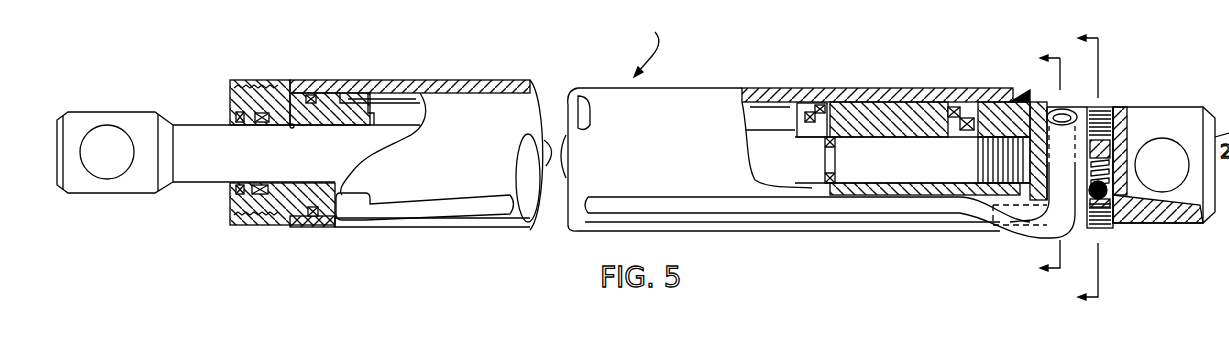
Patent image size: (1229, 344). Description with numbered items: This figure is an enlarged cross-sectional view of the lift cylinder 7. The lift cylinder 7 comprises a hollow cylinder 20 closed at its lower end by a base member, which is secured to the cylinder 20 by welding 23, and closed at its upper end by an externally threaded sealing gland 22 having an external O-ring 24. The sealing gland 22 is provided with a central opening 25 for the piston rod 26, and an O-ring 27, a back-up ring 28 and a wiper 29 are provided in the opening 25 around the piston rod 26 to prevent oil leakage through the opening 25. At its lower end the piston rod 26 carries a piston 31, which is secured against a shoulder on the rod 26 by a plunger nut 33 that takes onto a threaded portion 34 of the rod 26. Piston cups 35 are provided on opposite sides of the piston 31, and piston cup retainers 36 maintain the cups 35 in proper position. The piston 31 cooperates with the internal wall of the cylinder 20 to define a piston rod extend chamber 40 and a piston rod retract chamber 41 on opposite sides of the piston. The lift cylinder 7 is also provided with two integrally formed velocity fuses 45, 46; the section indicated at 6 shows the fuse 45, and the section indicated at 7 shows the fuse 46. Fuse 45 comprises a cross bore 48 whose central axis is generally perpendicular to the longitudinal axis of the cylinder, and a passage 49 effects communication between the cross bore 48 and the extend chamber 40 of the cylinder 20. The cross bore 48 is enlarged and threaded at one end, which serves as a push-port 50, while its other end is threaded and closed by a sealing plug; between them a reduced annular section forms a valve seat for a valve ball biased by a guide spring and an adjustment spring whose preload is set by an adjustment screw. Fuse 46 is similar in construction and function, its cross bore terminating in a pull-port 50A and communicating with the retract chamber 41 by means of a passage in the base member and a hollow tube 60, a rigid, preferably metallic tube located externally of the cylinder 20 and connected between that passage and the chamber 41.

The hollow cylinder 20 is at (503, 86).
The sealing gland 22 is at (282, 92).
The welding 23 is at (1018, 100).
The external O-ring 24 is at (311, 96).
The central opening 25 is at (292, 124).
The piston rod 26 is at (337, 168).
The O-ring 27 is at (268, 194).
The back-up ring 28 is at (258, 195).
The wiper 29 is at (236, 192).
The piston 31 is at (885, 104).
The plunger nut 33 is at (973, 118).
The threaded portion 34 is at (1000, 160).
The piston cups 35 is at (816, 96).
The piston cup retainers 36 is at (798, 114).
The piston rod extend chamber 40 is at (1032, 126).
The piston rod retract chamber 41 is at (403, 100).
The velocity fuse 45 is at (1124, 230).
The velocity fuse 46 is at (1058, 220).
The cross bore 48 is at (1106, 160).
The passage 49 is at (1092, 206).
The push-port 50 is at (1108, 110).
The pull-port 50A is at (1062, 110).
The hollow tube 60 is at (480, 206).
The section line 6 is at (1087, 165).
The lift cylinder 7 is at (847, 156).